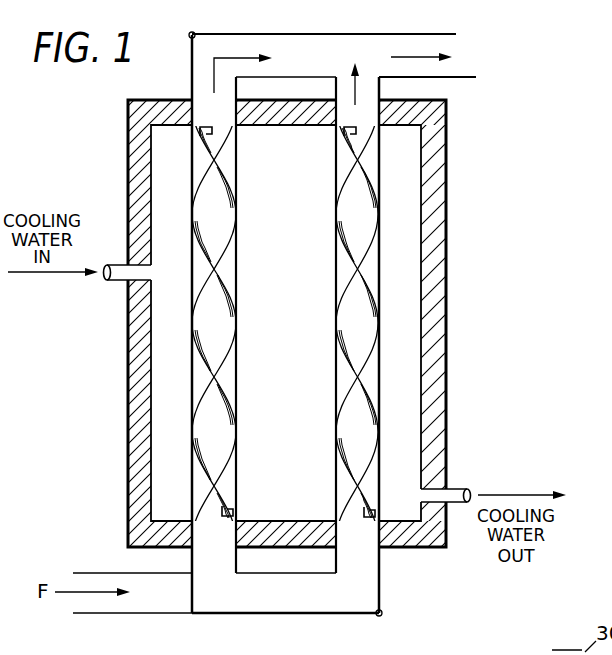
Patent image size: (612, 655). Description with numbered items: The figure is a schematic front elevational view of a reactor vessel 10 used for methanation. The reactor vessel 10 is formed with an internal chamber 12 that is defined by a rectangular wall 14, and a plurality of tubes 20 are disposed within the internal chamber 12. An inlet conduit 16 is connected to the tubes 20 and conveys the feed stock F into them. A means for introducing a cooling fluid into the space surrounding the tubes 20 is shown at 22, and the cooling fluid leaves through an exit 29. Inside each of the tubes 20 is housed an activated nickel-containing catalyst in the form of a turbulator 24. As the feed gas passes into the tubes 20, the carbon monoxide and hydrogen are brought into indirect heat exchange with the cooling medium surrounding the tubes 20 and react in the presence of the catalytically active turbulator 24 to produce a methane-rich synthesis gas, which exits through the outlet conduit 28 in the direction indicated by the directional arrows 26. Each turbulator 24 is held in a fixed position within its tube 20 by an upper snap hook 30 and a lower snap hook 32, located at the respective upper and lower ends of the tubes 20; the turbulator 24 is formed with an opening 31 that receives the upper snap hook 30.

The reactor vessel 10 is at (452, 181).
The internal chamber 12 is at (410, 464).
The rectangular wall 14 is at (447, 435).
The inlet conduit 16 is at (278, 617).
The tubes 20 is at (238, 370).
The means for introducing a cooling fluid 22 is at (117, 280).
The turbulator 24 is at (227, 310).
The directional arrows 26 is at (250, 53).
The outlet conduit 28 is at (443, 33).
The exit 29 is at (462, 487).
The upper snap hook 30 is at (198, 134).
The opening 31 is at (566, 648).
The lower snap hook 32 is at (215, 512).